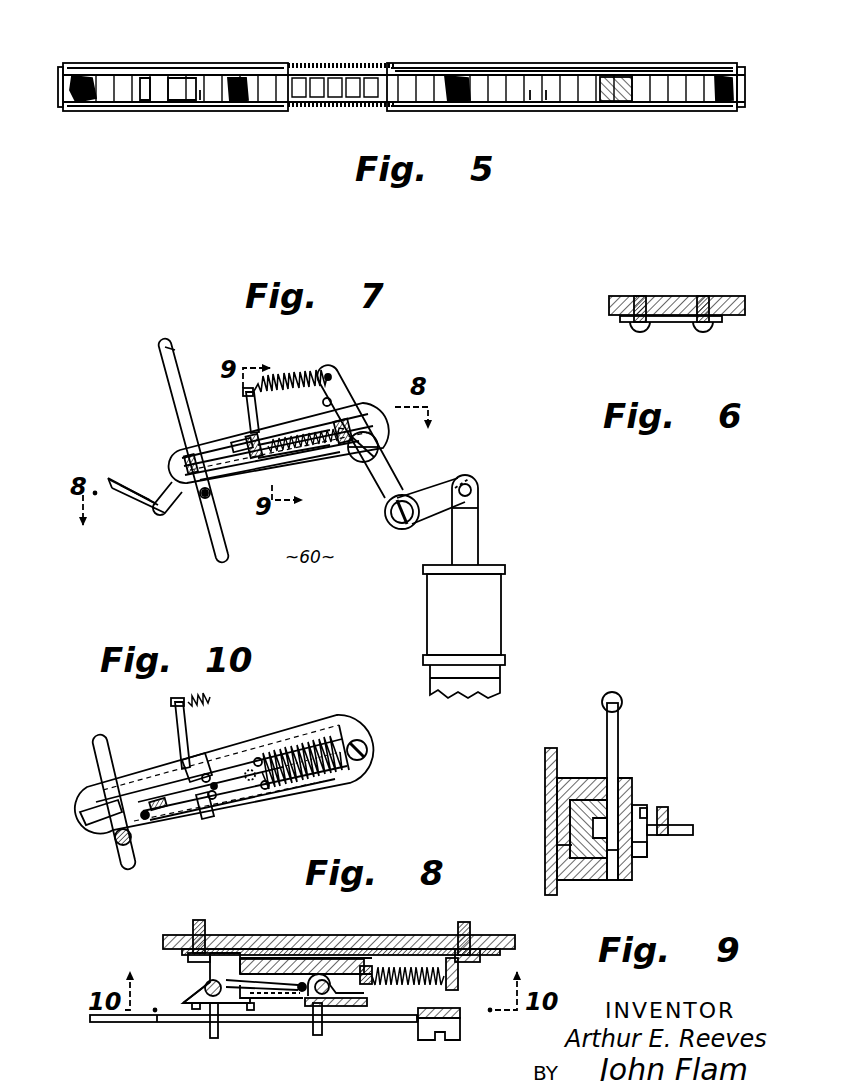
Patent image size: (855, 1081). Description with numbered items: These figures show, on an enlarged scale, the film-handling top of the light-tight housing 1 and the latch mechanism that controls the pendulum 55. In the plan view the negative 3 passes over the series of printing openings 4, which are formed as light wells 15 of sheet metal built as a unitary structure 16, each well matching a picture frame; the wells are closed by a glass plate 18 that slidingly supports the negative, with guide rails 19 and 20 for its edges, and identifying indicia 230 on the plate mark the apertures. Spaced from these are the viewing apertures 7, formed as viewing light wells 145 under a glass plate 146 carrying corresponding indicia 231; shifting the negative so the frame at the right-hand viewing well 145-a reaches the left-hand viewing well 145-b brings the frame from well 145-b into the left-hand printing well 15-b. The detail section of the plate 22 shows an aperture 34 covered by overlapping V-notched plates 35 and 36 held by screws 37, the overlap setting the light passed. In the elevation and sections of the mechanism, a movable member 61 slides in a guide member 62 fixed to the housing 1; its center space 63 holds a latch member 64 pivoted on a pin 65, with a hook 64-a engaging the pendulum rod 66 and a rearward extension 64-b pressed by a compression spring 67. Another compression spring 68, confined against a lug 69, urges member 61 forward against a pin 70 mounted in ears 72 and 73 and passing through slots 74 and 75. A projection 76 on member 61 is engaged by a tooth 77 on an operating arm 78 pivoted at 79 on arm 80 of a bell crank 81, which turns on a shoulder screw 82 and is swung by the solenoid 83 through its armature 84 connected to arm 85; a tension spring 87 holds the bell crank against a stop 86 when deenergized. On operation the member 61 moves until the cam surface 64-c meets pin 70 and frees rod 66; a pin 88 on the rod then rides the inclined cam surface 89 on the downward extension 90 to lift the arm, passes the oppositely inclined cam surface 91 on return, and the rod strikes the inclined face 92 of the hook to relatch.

In FIG. 8, the light-tight housing 1 is at (233, 938).
In FIG. 9, the light-tight housing 1 is at (545, 758).
In FIG. 5, the negative 3 is at (342, 75).
In FIG. 5, the printing openings 4 is at (142, 78).
In FIG. 5, the viewing apertures 7 is at (570, 78).
In FIG. 5, the light wells 15 is at (148, 102).
In FIG. 5, the left-hand printing well 15-b is at (84, 76).
In FIG. 5, the unitary structure 16 is at (235, 65).
In FIG. 5, the glass plate 18 is at (200, 102).
In FIG. 5, the guide rail 19 is at (270, 72).
In FIG. 5, the guide rail 20 is at (258, 108).
In FIG. 6, the plate 22 is at (737, 296).
In FIG. 6, the apertures 34 is at (660, 300).
In FIG. 6, the overlapping plate 35 is at (628, 323).
In FIG. 6, the overlapping plate 36 is at (722, 320).
In FIG. 6, the screws 37 is at (641, 332).
In FIG. 7, the pendulum 55 is at (162, 370).
In FIG. 7, the movable member 61 is at (290, 455).
In FIG. 10, the movable member 61 is at (245, 790).
In FIG. 8, the movable member 61 is at (350, 945).
In FIG. 9, the movable member 61 is at (570, 845).
In FIG. 7, the guide member 62 is at (325, 455).
In FIG. 10, the guide member 62 is at (300, 790).
In FIG. 8, the guide member 62 is at (472, 950).
In FIG. 9, the guide member 62 is at (568, 778).
In FIG. 8, the center space 63 is at (290, 958).
In FIG. 9, the center space 63 is at (590, 830).
In FIG. 7, the latch member 64 is at (210, 495).
In FIG. 10, the latch member 64 is at (162, 808).
In FIG. 8, the latch member 64 is at (238, 1003).
In FIG. 9, the latch member 64 is at (647, 850).
In FIG. 10, the hook 64-a is at (100, 826).
In FIG. 8, the hook 64-a is at (196, 1010).
In FIG. 8, the rearward extension 64-b is at (345, 1005).
In FIG. 8, the cam surface 64-c is at (260, 958).
In FIG. 9, the cam surface 64-c is at (603, 880).
In FIG. 10, the pin 65 is at (232, 752).
In FIG. 8, the pin 65 is at (330, 1006).
In FIG. 7, the pendulum rod 66 is at (182, 416).
In FIG. 10, the pendulum rod 66 is at (93, 752).
In FIG. 8, the pendulum rod 66 is at (206, 984).
In FIG. 10, the compression spring 67 is at (266, 790).
In FIG. 8, the compression spring 67 is at (375, 987).
In FIG. 10, the compression spring 68 is at (318, 745).
In FIG. 8, the compression spring 68 is at (416, 987).
In FIG. 10, the lug 69 is at (358, 740).
In FIG. 8, the lug 69 is at (458, 985).
In FIG. 10, the pin 70 is at (175, 724).
In FIG. 8, the pin 70 is at (300, 995).
In FIG. 9, the pin 70 is at (618, 746).
In FIG. 10, the ear 72 is at (204, 762).
In FIG. 9, the ear 72 is at (632, 788).
In FIG. 10, the ear 73 is at (210, 800).
In FIG. 8, the ear 73 is at (308, 945).
In FIG. 9, the ear 73 is at (630, 882).
In FIG. 9, the slot 74 is at (640, 812).
In FIG. 8, the slot 75 is at (316, 996).
In FIG. 9, the slot 75 is at (614, 880).
In FIG. 7, the projection 76 is at (270, 440).
In FIG. 10, the projection 76 is at (200, 776).
In FIG. 8, the projection 76 is at (317, 1035).
In FIG. 9, the projection 76 is at (694, 830).
In FIG. 7, the tooth 77 is at (248, 440).
In FIG. 7, the operating arm 78 is at (318, 470).
In FIG. 8, the operating arm 78 is at (395, 1024).
In FIG. 9, the operating arm 78 is at (668, 812).
In FIG. 7, the pivot 79 is at (380, 447).
In FIG. 8, the pivot 79 is at (445, 1040).
In FIG. 7, the bell crank arm 80 is at (350, 396).
In FIG. 8, the bell crank arm 80 is at (460, 1013).
In FIG. 7, the bell crank 81 is at (400, 482).
In FIG. 7, the shoulder screw 82 is at (398, 528).
In FIG. 7, the solenoid 83 is at (464, 631).
In FIG. 7, the armature 84 is at (478, 538).
In FIG. 7, the bell crank arm 85 is at (418, 516).
In FIG. 7, the stop 86 is at (344, 382).
In FIG. 7, the tension spring 87 is at (310, 377).
In FIG. 10, the tension spring 87 is at (206, 700).
In FIG. 9, the tension spring 87 is at (622, 703).
In FIG. 7, the pin 88 is at (210, 498).
In FIG. 10, the pin 88 is at (131, 840).
In FIG. 8, the pin 88 is at (216, 1038).
In FIG. 7, the inclined cam surface 89 is at (170, 502).
In FIG. 7, the downward extension 90 is at (146, 505).
In FIG. 7, the inclined cam surface 91 is at (130, 498).
In FIG. 8, the inclined face 92 is at (196, 996).
In FIG. 5, the viewing light wells 145 is at (610, 82).
In FIG. 5, the right-hand viewing well 145-a is at (720, 76).
In FIG. 5, the left-hand viewing well 145-b is at (404, 78).
In FIG. 5, the glass plate 146 is at (500, 78).
In FIG. 5, the identifying indicia 230 is at (168, 82).
In FIG. 5, the indicia 231 is at (530, 102).